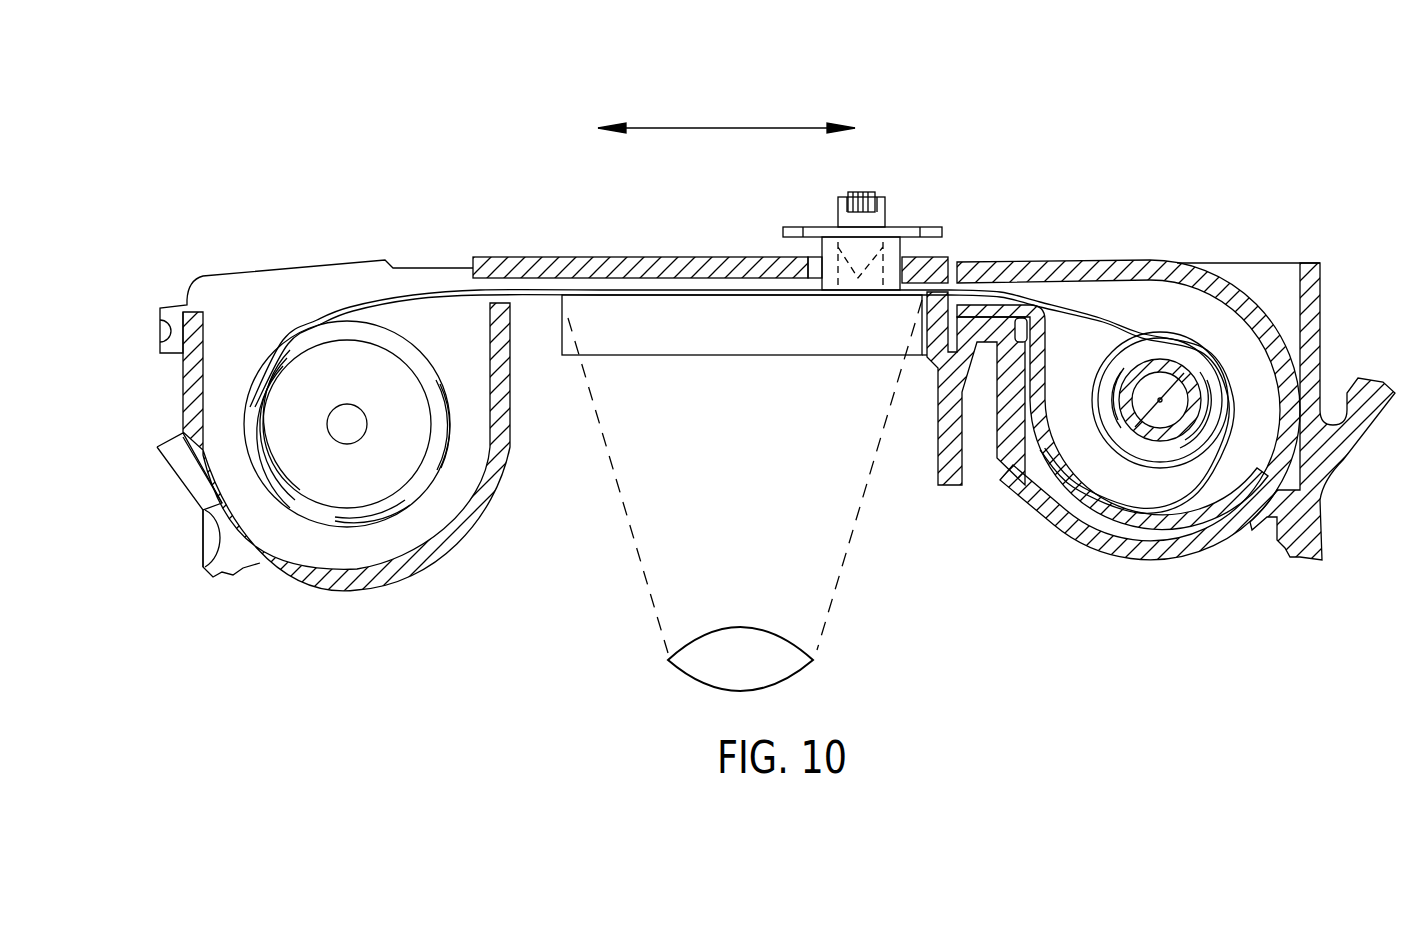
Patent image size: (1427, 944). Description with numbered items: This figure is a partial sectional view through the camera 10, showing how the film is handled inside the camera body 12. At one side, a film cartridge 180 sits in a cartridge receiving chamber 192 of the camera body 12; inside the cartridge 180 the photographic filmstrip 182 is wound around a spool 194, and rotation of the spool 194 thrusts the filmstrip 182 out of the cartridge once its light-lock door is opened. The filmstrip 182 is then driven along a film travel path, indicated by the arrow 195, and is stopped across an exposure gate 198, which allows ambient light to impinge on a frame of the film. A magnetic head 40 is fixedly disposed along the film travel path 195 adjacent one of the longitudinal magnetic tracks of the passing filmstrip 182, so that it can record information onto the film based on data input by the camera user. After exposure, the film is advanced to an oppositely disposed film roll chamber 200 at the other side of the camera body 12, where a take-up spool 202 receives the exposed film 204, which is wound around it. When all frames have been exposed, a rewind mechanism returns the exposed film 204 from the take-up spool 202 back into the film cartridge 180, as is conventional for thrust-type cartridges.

The camera 10 is at (760, 371).
The camera body 12 is at (1322, 328).
The magnetic head 40 is at (887, 210).
The film cartridge 180 is at (1150, 391).
The photographic filmstrip 182 is at (677, 283).
The cartridge receiving chamber 192 is at (1255, 293).
The spool 194 is at (1153, 427).
The film travel path 195 is at (738, 128).
The exposure gate 198 is at (788, 455).
The film roll chamber 200 is at (243, 502).
The take-up spool 202 is at (400, 384).
The exposed film 204 is at (425, 493).